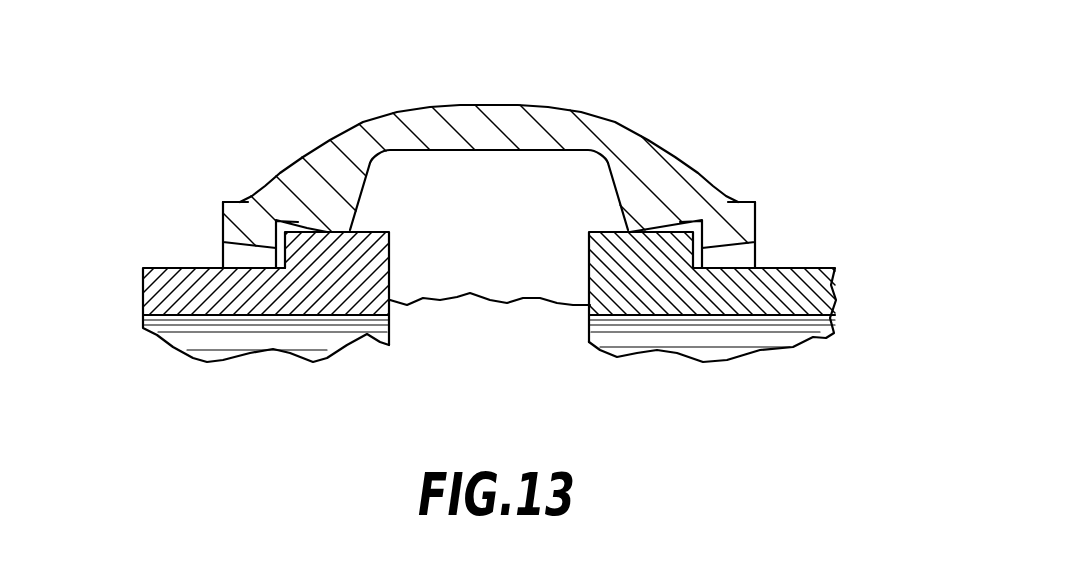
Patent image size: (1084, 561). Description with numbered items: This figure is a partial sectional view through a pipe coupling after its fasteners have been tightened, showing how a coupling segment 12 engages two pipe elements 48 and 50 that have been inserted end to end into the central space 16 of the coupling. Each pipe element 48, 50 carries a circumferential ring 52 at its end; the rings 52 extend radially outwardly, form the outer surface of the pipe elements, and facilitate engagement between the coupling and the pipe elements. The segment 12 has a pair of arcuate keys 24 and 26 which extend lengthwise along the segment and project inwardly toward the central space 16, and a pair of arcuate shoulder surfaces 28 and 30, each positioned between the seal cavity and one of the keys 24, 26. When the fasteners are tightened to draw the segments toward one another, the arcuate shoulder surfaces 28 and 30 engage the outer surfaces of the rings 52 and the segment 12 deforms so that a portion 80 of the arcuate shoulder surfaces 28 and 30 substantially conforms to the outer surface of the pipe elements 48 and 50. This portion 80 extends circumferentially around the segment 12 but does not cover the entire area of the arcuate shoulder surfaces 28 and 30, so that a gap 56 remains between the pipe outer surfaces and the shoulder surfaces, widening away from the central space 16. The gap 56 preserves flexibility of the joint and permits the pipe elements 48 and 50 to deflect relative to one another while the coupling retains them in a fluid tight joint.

The segment 12 is at (596, 122).
The central space 16 is at (510, 344).
The arcuate key 24 is at (230, 232).
The arcuate key 26 is at (740, 228).
The arcuate shoulder surface 28 is at (250, 200).
The arcuate shoulder surface 30 is at (697, 220).
The pipe element 48 is at (152, 293).
The pipe element 50 is at (810, 288).
The circumferential ring 52 is at (588, 275).
The gap 56 is at (288, 230).
The portion of the arcuate shoulder surfaces 80 is at (349, 230).